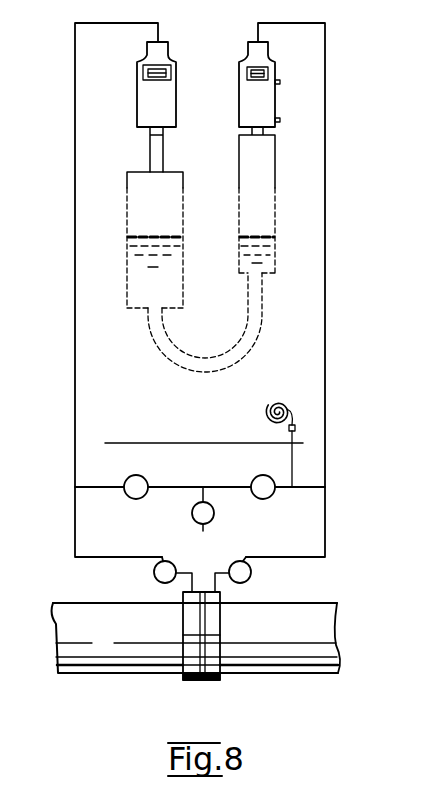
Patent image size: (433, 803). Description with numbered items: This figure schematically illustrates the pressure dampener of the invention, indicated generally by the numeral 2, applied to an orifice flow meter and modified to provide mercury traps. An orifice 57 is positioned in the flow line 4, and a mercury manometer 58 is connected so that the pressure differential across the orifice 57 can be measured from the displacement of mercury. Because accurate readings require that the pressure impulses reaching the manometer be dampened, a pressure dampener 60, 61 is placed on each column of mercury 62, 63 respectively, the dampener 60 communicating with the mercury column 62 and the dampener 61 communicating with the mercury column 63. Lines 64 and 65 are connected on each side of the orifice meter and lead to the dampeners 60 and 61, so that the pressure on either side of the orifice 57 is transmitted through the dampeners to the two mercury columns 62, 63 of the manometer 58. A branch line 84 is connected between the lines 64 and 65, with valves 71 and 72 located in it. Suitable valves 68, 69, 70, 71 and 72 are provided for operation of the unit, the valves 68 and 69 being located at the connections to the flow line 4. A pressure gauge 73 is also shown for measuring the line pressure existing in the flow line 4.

The dampener 2 is at (188, 104).
The flow line 4 is at (331, 606).
The orifice 57 is at (200, 680).
The mercury manometer 58 is at (171, 361).
The pressure dampener 60 is at (144, 90).
The pressure dampener 61 is at (247, 88).
The mercury column 62 is at (183, 242).
The mercury column 63 is at (242, 241).
The line 64 is at (75, 517).
The line 65 is at (325, 518).
The valve 68 is at (154, 572).
The valve 69 is at (253, 577).
The valve 70 is at (212, 521).
The valve 71 is at (142, 478).
The valve 72 is at (262, 478).
The pressure gauge 73 is at (268, 404).
The branch line 84 is at (190, 486).